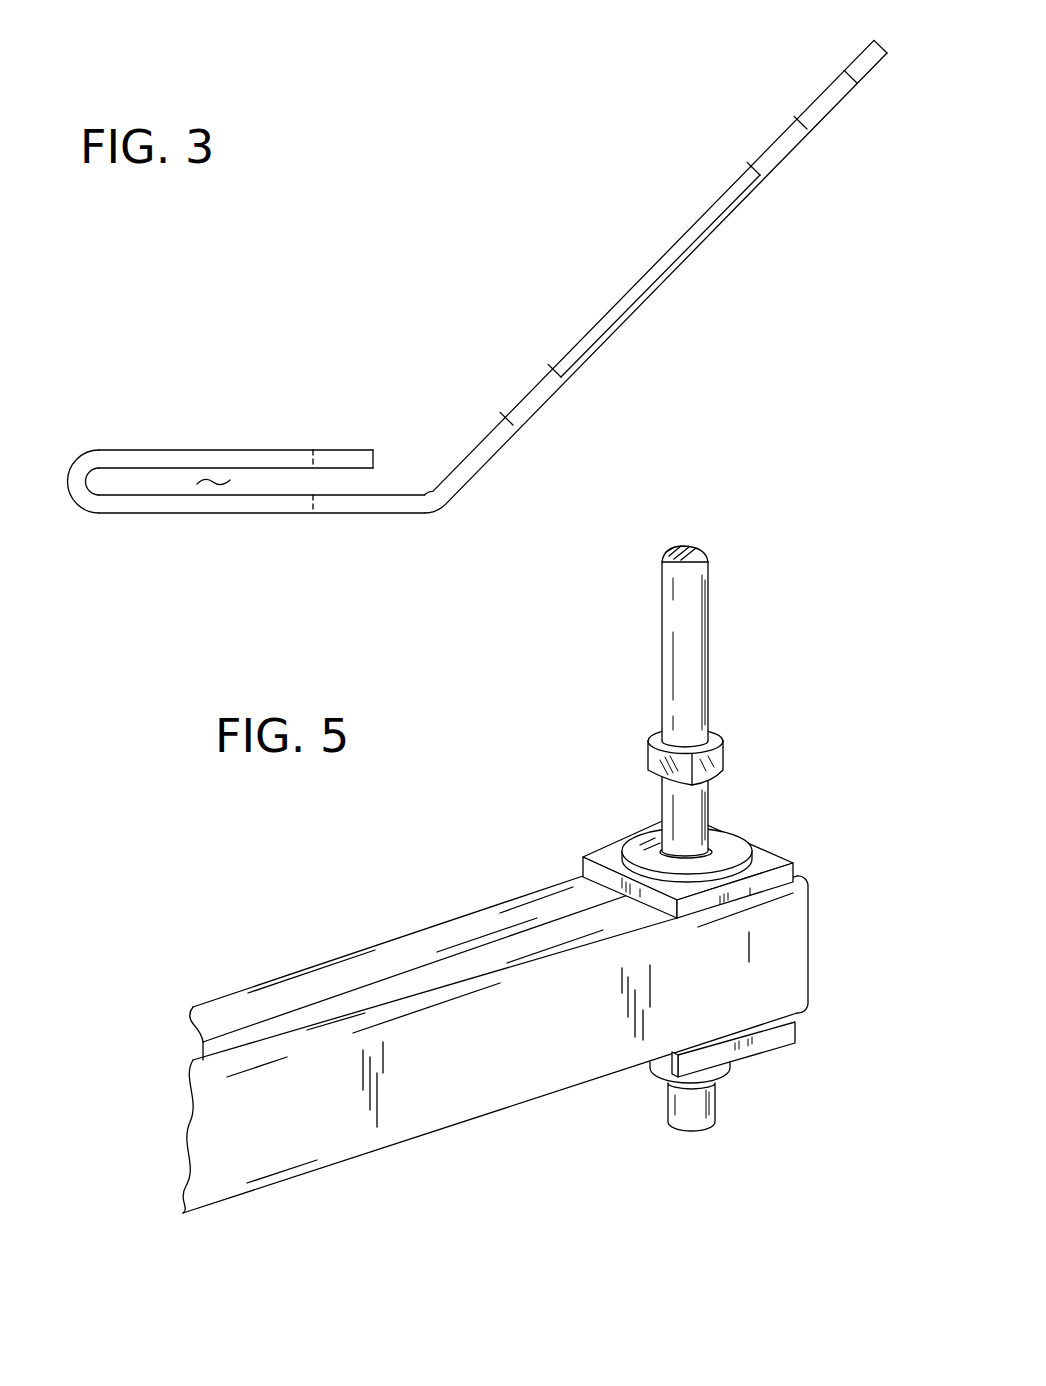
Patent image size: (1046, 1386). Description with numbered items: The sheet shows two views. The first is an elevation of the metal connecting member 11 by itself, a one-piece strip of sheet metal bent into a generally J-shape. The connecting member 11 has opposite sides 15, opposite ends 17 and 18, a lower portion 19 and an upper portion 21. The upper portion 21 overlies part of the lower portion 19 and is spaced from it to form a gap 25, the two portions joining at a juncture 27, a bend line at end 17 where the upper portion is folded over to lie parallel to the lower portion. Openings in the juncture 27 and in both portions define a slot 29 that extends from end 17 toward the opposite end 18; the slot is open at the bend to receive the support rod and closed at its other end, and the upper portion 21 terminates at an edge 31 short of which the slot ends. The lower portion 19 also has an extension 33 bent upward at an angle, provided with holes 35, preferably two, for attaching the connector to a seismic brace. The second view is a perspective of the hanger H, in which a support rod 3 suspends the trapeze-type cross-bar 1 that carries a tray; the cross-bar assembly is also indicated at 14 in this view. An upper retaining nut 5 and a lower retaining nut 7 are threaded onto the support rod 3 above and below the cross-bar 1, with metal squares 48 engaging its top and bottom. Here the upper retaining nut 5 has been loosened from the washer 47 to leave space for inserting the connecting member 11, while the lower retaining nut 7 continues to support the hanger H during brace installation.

In FIG. 5, the cross-bar 1 is at (480, 1103).
In FIG. 5, the support rod 3 is at (681, 657).
In FIG. 5, the upper retaining nut 5 is at (717, 757).
In FIG. 5, the lower retaining nut 7 is at (718, 1074).
In FIG. 3, the metal connecting member 11 is at (669, 272).
In FIG. 5, the rail assembly 14 is at (800, 988).
In FIG. 3, the opposite sides 15 is at (680, 250).
In FIG. 3, the end 17 is at (74, 508).
In FIG. 3, the opposite end 18 is at (878, 42).
In FIG. 3, the lower portion 19 is at (155, 515).
In FIG. 3, the upper portion 21 is at (188, 449).
In FIG. 3, the gap 25 is at (213, 487).
In FIG. 3, the juncture 27 is at (78, 487).
In FIG. 3, the slot 29 is at (307, 458).
In FIG. 3, the edge 31 is at (378, 457).
In FIG. 3, the extension 33 is at (613, 320).
In FIG. 3, the holes 35 is at (753, 167).
In FIG. 5, the washer 47 is at (727, 850).
In FIG. 5, the metal squares 48 is at (793, 863).
In FIG. 5, the hanger H is at (168, 1063).